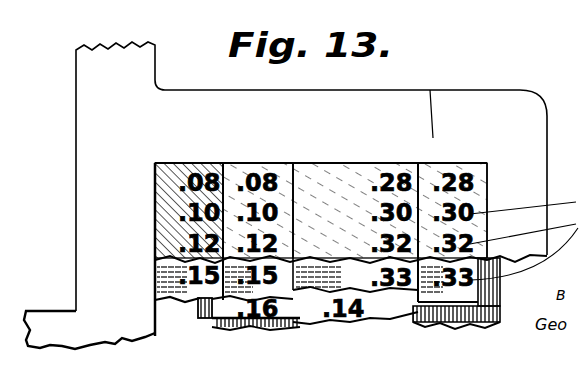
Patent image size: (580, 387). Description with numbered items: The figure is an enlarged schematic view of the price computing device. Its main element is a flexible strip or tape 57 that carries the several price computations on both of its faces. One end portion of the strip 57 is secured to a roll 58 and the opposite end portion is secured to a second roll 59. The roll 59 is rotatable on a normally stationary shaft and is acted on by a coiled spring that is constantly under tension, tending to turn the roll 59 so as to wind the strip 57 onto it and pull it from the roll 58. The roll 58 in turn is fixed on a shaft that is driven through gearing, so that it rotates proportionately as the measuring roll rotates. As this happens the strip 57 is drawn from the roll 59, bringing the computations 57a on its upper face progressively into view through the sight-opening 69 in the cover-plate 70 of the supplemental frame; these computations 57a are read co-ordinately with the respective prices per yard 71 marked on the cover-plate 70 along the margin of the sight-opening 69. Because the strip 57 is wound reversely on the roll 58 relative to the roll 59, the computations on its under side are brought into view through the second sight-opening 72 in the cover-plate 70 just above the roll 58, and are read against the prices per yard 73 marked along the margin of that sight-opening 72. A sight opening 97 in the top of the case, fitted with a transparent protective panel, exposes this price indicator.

The prices per yard 71 is at (181, 212).
The sight-opening 69 is at (292, 183).
The sight opening 97 is at (318, 185).
The prices per yard 73 is at (373, 213).
The sight-opening 72 is at (488, 180).
The computations 57a is at (233, 285).
The second roll 59 is at (252, 330).
The cover-plate 70 is at (313, 273).
The flexible strip or tape 57 is at (309, 311).
The roll 58 is at (456, 322).